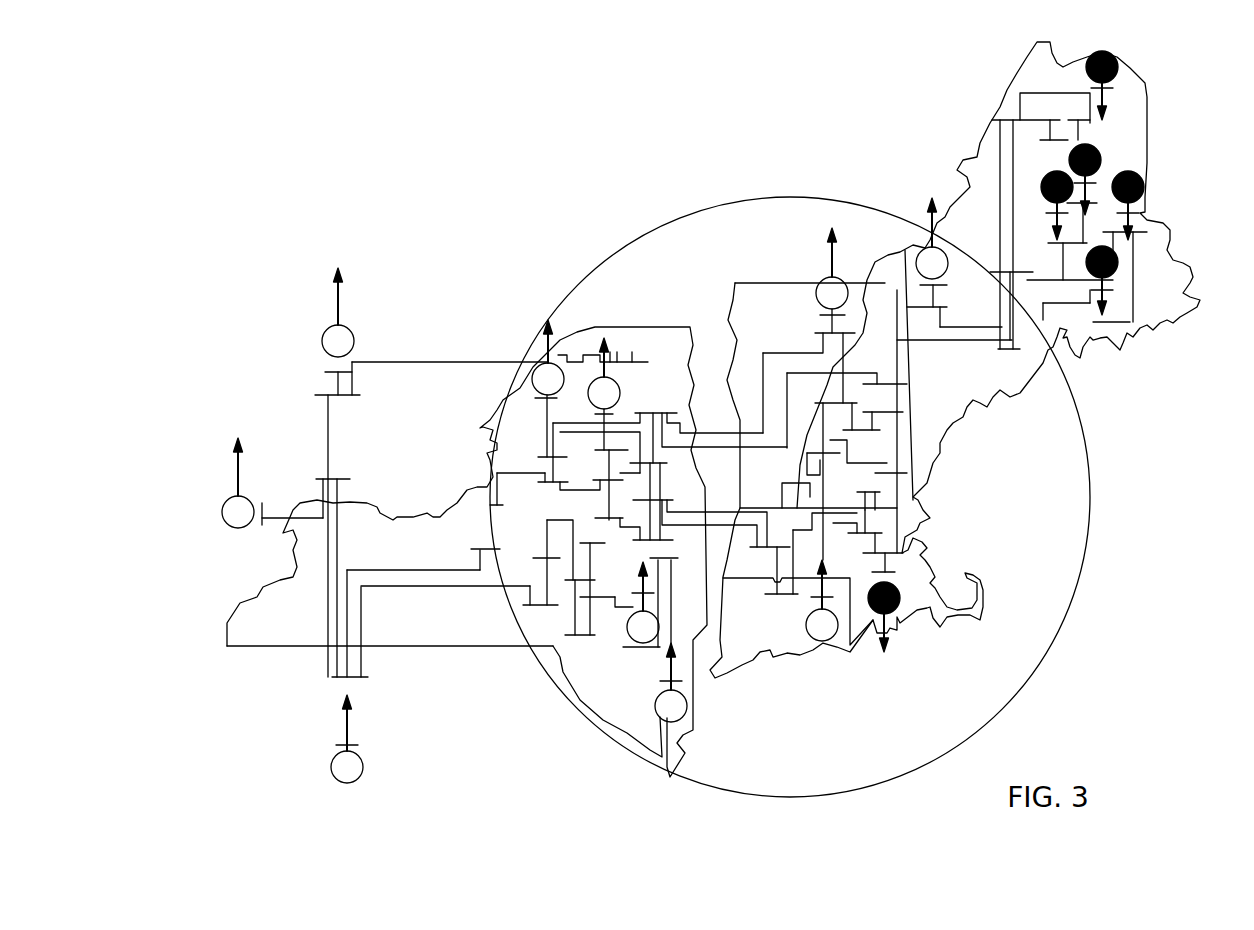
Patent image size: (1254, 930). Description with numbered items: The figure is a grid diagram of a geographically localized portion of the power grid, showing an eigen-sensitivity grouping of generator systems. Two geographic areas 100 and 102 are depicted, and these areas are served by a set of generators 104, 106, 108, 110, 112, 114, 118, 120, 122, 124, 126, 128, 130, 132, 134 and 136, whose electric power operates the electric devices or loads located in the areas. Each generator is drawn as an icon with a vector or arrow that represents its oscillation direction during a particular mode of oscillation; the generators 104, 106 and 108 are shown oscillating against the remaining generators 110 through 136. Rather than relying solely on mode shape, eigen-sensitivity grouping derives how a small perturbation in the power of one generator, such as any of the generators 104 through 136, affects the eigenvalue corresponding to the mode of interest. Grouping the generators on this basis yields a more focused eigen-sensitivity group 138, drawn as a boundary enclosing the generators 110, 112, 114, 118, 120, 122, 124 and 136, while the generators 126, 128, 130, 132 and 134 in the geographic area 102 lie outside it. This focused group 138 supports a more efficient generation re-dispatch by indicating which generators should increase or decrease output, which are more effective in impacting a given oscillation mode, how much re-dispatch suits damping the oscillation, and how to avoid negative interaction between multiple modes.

The geographic area 100 is at (421, 648).
The geographic area 102 is at (1135, 340).
The generator 104 is at (322, 341).
The generator 106 is at (238, 529).
The generator 108 is at (363, 766).
The generator 110 is at (533, 372).
The generator 112 is at (603, 375).
The generator 114 is at (627, 626).
The generator 118 is at (825, 278).
The generator 120 is at (840, 648).
The generator 122 is at (897, 588).
The generator 124 is at (925, 250).
The generator 126 is at (1118, 60).
The generator 128 is at (1100, 152).
The generator 130 is at (1047, 177).
The generator 132 is at (1145, 179).
The generator 134 is at (1118, 268).
The generator 136 is at (657, 712).
The eigen-sensitivity group 138 is at (730, 200).